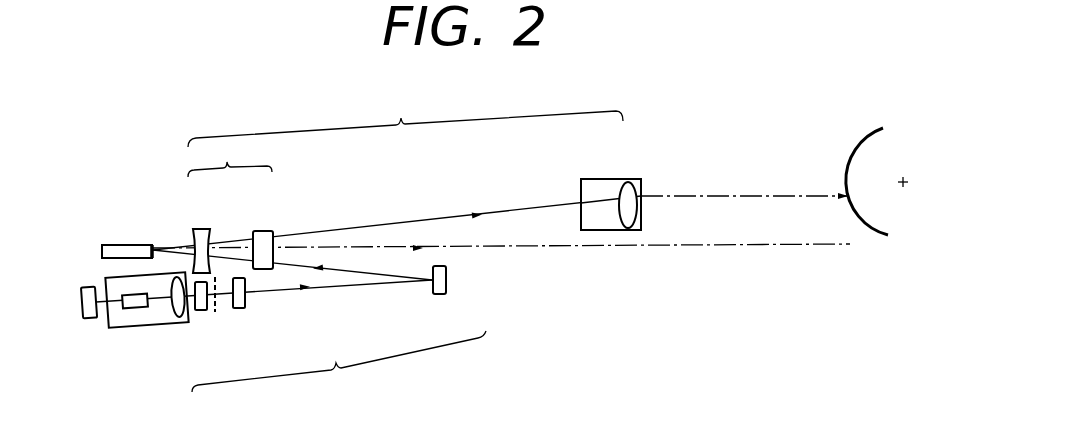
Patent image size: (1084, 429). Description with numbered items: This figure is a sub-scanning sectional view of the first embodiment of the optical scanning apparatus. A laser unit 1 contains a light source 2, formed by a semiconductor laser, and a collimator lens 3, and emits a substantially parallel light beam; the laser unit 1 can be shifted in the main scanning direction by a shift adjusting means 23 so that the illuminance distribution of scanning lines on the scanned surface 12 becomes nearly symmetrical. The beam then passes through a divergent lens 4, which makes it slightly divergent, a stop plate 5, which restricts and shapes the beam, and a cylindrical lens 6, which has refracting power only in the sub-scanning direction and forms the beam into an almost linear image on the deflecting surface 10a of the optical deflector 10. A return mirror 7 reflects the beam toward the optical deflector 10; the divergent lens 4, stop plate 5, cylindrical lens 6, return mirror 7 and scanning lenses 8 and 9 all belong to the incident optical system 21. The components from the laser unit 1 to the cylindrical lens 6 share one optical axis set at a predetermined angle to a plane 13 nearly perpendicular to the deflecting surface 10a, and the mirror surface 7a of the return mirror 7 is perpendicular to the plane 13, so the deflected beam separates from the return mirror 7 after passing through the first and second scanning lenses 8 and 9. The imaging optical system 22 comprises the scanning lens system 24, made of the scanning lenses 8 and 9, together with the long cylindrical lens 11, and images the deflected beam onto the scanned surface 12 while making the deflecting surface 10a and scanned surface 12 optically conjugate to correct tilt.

The laser unit 1 is at (112, 327).
The light source 2 is at (135, 308).
The collimator lens 3 is at (178, 318).
The divergent lens 4 is at (200, 311).
The stop plate 5 is at (220, 310).
The cylindrical lens 6 is at (243, 309).
The return mirror 7 is at (447, 288).
The mirror surface 7a is at (428, 284).
The first scanning lens 8 is at (197, 227).
The second scanning lens 9 is at (259, 228).
The optical deflector 10 is at (127, 243).
The deflecting surface 10a is at (155, 244).
The long cylindrical lens 11 is at (613, 178).
The scanned surface 12 is at (867, 142).
The plane 13 is at (755, 247).
The incident optical system 21 is at (339, 366).
The imaging optical system 22 is at (405, 120).
The shift adjusting means 23 is at (90, 318).
The scanning lens system 24 is at (230, 158).